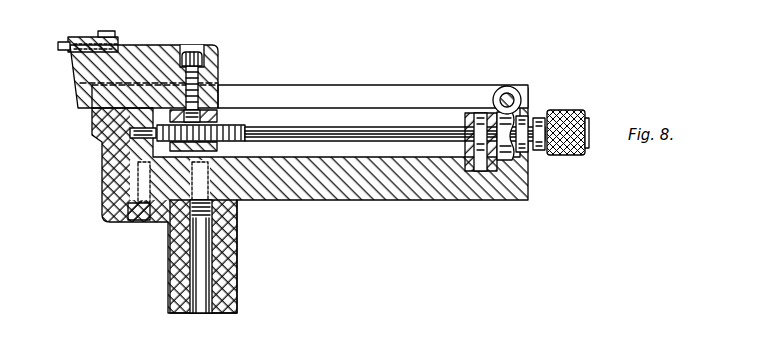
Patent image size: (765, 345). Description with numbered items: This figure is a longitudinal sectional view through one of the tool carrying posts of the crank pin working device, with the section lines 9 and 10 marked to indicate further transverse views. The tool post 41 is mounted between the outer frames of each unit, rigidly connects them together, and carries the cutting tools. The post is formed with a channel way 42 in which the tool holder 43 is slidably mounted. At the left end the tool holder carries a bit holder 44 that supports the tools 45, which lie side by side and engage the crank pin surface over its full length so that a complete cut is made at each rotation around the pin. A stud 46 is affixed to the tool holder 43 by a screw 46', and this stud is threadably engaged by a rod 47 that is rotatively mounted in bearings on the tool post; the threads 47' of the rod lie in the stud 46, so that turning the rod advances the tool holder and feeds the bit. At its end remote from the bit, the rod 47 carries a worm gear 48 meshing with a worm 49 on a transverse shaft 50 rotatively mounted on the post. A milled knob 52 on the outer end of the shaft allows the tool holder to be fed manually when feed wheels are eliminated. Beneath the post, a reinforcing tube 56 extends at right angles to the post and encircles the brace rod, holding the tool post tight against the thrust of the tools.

The section line 9- 9 is at (268, 52).
The section line 10- 10 is at (507, 72).
The tool post 41 is at (310, 200).
The channel way 42 is at (322, 93).
The tool holder 43 is at (140, 45).
The bit holder 44 is at (90, 36).
The tool 45 is at (58, 45).
The stud 46 is at (211, 92).
The screw 46' is at (193, 61).
The rod 47 is at (395, 102).
The threads 47' is at (212, 107).
The worm gear 48 is at (510, 158).
The worm 49 is at (530, 100).
The transverse shaft 50 is at (516, 90).
The milled knob 52 is at (575, 110).
The reinforcing tube 56 is at (172, 272).